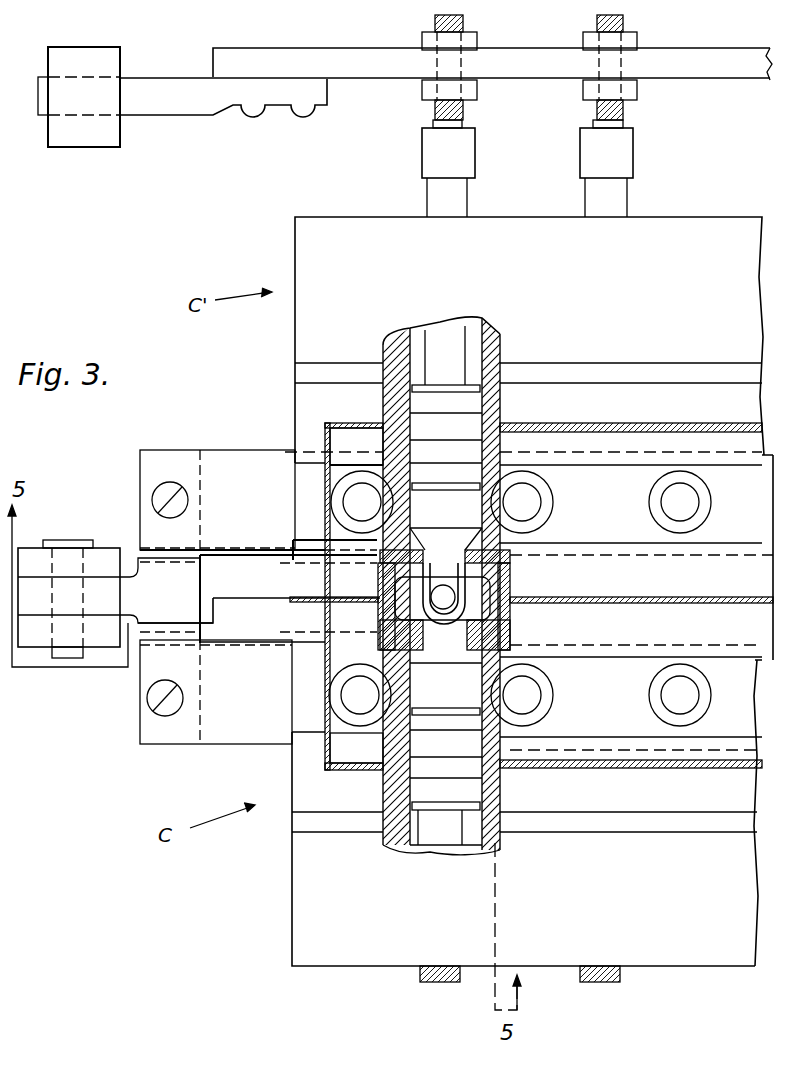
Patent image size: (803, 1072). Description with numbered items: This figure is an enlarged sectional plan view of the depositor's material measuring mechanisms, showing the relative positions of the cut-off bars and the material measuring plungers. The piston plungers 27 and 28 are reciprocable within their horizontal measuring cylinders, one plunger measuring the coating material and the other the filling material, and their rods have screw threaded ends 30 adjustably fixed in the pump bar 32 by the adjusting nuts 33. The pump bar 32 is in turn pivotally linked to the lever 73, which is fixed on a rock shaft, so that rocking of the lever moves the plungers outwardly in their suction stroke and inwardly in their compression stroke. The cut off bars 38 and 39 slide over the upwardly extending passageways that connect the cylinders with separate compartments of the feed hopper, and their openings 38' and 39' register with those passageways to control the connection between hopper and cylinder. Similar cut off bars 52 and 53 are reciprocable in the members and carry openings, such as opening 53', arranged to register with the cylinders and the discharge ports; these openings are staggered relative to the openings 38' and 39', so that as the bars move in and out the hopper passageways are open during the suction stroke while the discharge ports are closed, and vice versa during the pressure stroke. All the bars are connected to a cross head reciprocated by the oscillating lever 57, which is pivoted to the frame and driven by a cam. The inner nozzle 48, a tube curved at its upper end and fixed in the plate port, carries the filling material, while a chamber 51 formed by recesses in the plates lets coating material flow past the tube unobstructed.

The piston plunger 27 is at (446, 754).
The piston plunger 28 is at (446, 438).
The screw threaded ends 30 is at (592, 22).
The pump bar 32 is at (446, 82).
The adjusting nuts 33 is at (588, 92).
The cut off bar 38 is at (216, 692).
The opening 38' is at (531, 682).
The cut off bar 39 is at (232, 500).
The opening 39' is at (546, 483).
The inner nozzle 48 is at (458, 596).
The chamber 51 is at (470, 605).
The cut off bar 52 is at (290, 630).
The cut off bar 53 is at (258, 591).
The opening 53' is at (446, 531).
The oscillating lever 57 is at (108, 656).
The lever 73 is at (103, 133).